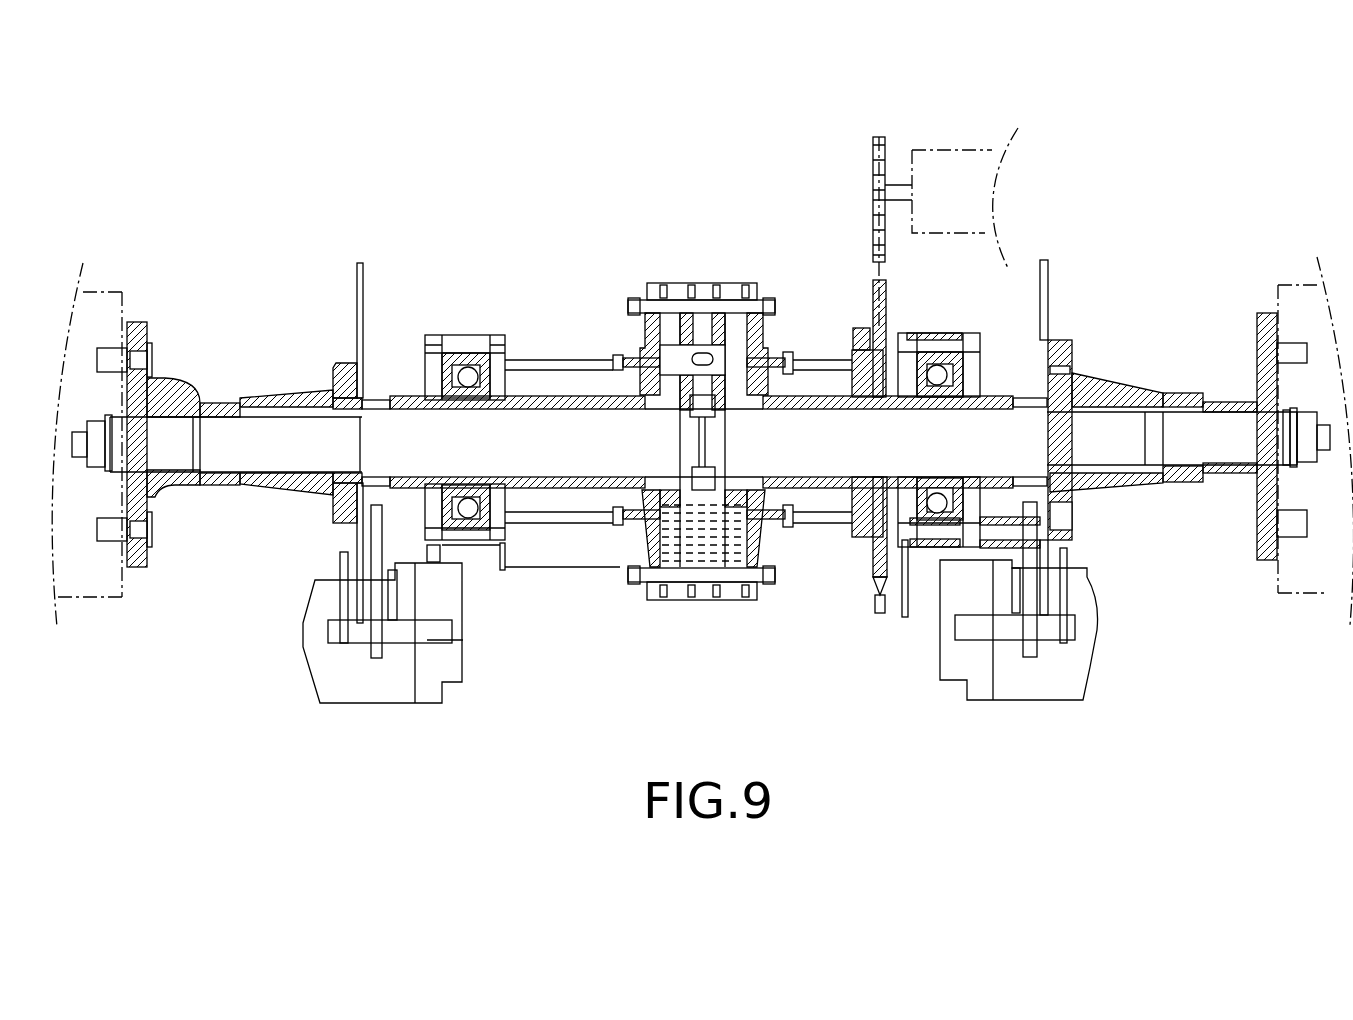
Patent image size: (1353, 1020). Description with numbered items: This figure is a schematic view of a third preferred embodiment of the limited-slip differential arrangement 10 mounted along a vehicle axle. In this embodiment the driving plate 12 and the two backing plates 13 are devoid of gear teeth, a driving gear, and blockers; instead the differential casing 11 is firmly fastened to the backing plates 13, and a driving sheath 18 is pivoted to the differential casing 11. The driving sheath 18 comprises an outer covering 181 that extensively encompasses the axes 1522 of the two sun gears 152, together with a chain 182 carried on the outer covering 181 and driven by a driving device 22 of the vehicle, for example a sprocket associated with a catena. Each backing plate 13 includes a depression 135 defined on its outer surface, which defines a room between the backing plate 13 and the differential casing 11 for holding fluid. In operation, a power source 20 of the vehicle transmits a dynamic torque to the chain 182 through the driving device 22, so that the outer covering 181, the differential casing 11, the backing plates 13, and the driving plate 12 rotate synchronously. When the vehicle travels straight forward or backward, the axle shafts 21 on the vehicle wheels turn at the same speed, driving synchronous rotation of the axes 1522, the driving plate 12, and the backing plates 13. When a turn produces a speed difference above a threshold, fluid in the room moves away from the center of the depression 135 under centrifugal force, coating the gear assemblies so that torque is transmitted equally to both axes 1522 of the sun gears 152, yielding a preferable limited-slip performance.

The axle assembly 10 is at (188, 212).
The differential casing 11 is at (643, 332).
The driving plate 12 is at (703, 337).
The backing plate 13 is at (640, 340).
The depression 135 is at (673, 320).
The sun gear 152 is at (737, 452).
The axis 1522 is at (832, 453).
The driving sheath 18 is at (833, 325).
The outer covering 181 is at (813, 397).
The chain 182 is at (873, 313).
The power source 20 is at (951, 170).
The axle shaft 21 is at (1318, 578).
The driving device 22 is at (874, 128).